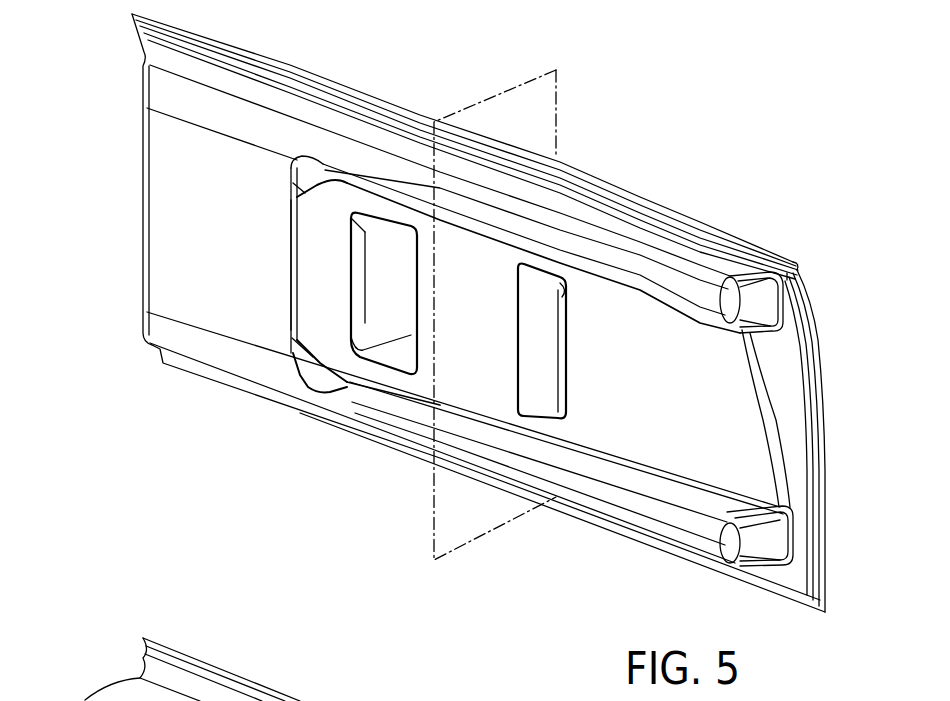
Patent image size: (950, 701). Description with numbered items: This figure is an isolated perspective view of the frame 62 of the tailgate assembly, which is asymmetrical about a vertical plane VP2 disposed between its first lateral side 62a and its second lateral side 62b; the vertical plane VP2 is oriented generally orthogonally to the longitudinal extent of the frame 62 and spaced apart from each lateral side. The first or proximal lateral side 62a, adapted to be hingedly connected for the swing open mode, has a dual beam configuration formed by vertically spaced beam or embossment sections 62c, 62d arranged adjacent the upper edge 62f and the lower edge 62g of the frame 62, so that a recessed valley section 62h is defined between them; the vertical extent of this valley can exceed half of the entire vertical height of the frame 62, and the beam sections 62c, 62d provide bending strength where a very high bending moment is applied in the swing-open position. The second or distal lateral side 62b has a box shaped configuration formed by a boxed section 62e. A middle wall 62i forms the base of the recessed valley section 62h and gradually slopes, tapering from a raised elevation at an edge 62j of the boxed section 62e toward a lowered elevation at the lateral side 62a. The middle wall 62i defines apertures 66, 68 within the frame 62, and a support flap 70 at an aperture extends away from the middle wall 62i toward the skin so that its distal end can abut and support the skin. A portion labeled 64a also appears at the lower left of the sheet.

The frame 62 is at (477, 313).
The first lateral side 62a is at (796, 425).
The second lateral side 62b is at (169, 232).
The beam section 62c is at (662, 263).
The beam section 62d is at (645, 477).
The boxed section 62e is at (221, 266).
The upper edge 62f is at (637, 195).
The lower edge 62g is at (712, 567).
The recessed valley section 62h is at (718, 391).
The middle wall 62i is at (682, 392).
The edge of the boxed section 62j is at (292, 220).
The aperture 66 is at (418, 334).
The aperture 68 is at (568, 418).
The support flap 70 is at (390, 307).
The vertical plane VP2 is at (556, 93).
The outer panel portion 64a is at (320, 700).